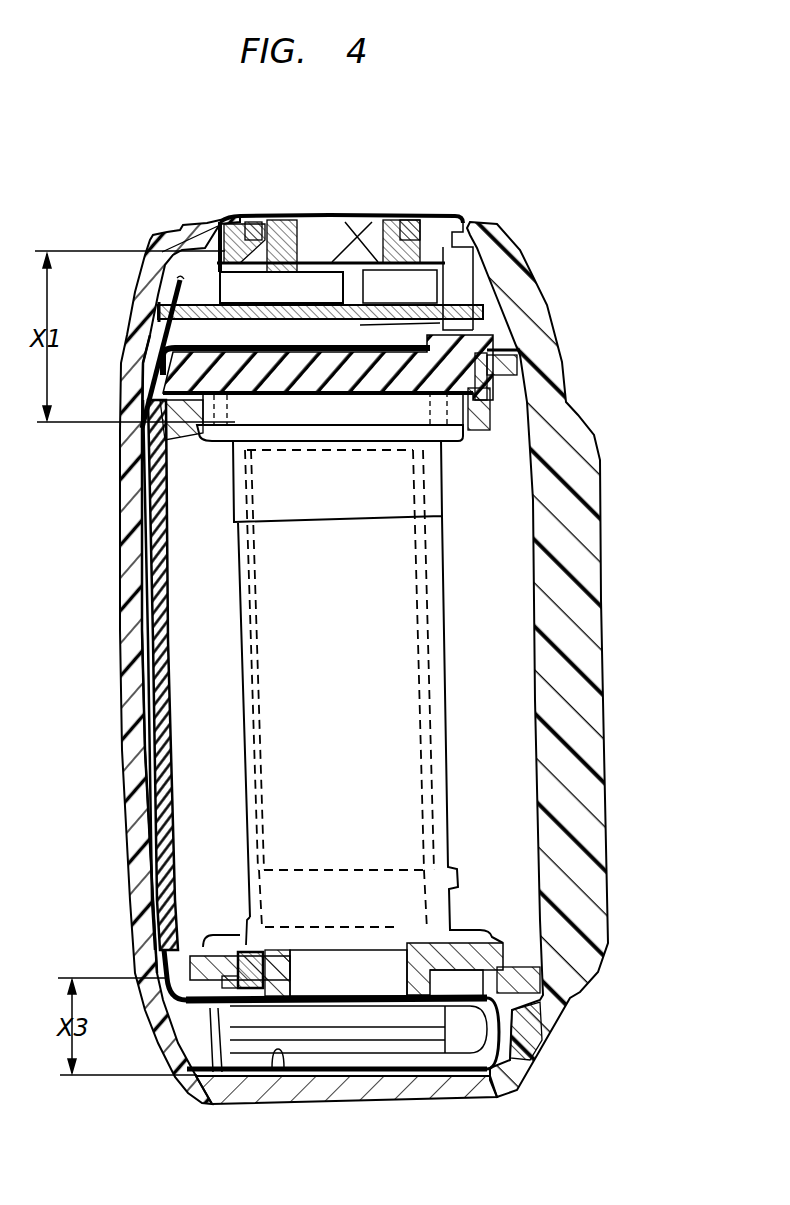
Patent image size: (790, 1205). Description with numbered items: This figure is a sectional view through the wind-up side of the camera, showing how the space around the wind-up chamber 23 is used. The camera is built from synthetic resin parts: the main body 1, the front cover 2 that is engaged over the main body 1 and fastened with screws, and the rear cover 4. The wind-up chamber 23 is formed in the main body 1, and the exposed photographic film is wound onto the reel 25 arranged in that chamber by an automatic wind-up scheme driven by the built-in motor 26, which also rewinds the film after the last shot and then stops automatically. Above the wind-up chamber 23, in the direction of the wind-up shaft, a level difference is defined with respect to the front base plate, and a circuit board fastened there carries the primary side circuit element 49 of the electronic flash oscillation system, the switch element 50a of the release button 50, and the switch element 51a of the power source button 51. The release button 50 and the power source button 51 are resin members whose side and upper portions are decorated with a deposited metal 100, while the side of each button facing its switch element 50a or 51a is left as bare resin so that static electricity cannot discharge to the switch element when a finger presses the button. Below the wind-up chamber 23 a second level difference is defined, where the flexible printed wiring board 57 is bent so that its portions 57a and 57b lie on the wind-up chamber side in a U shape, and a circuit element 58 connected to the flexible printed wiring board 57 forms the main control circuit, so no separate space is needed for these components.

The main body 1 is at (150, 557).
The front cover 2 is at (130, 651).
The rear cover 4 is at (577, 614).
The wind-up chamber 23 is at (195, 861).
The reel 25 is at (447, 752).
The built-in motor 26 is at (390, 597).
The primary side circuit element 49 is at (355, 325).
The release button 50 is at (277, 215).
The switch element 50a is at (311, 285).
The power source button 51 is at (405, 222).
The switch element 51a is at (374, 280).
The flexible printed wiring board 57 is at (162, 760).
The portion of flexible printed wiring board 57a is at (213, 1076).
The portion of flexible printed wiring board 57b is at (281, 1070).
The circuit element 58 is at (354, 1050).
The metal 100 is at (247, 220).